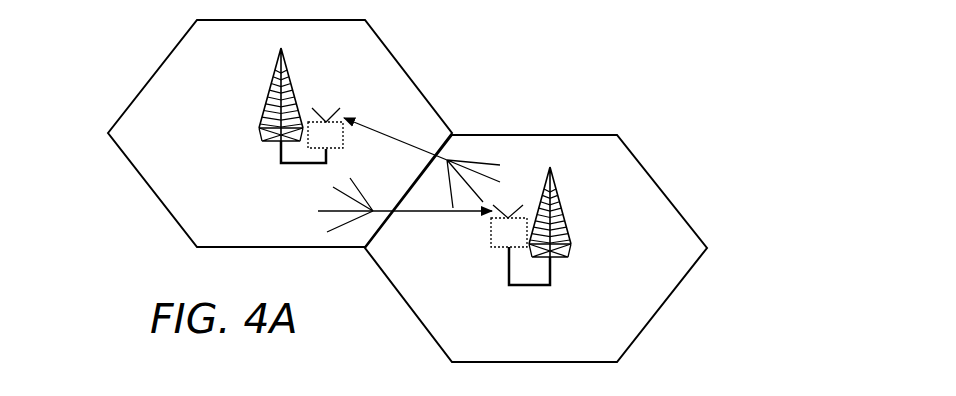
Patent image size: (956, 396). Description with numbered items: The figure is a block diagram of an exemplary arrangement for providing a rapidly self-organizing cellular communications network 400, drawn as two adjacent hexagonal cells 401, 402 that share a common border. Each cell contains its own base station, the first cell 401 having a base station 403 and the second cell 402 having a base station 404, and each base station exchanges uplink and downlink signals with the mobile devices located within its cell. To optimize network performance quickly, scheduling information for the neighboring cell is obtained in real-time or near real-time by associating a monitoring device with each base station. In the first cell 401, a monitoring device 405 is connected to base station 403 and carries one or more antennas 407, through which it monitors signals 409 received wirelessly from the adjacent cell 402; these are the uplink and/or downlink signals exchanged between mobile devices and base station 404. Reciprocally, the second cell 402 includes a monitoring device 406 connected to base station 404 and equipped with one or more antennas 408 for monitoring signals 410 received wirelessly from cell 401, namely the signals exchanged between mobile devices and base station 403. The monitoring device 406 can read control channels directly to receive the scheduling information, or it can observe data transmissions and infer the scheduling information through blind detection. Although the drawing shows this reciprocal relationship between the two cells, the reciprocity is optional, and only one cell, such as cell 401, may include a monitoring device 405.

The cellular communications network 400 is at (121, 47).
The cell 401 is at (280, 133).
The cell 402 is at (536, 248).
The base station 403 is at (269, 105).
The base station 404 is at (560, 226).
The monitoring device 405 is at (343, 148).
The monitoring device 406 is at (491, 247).
The antenna 407 is at (318, 107).
The antenna 408 is at (508, 200).
The signals 409 is at (422, 162).
The signals 410 is at (405, 210).